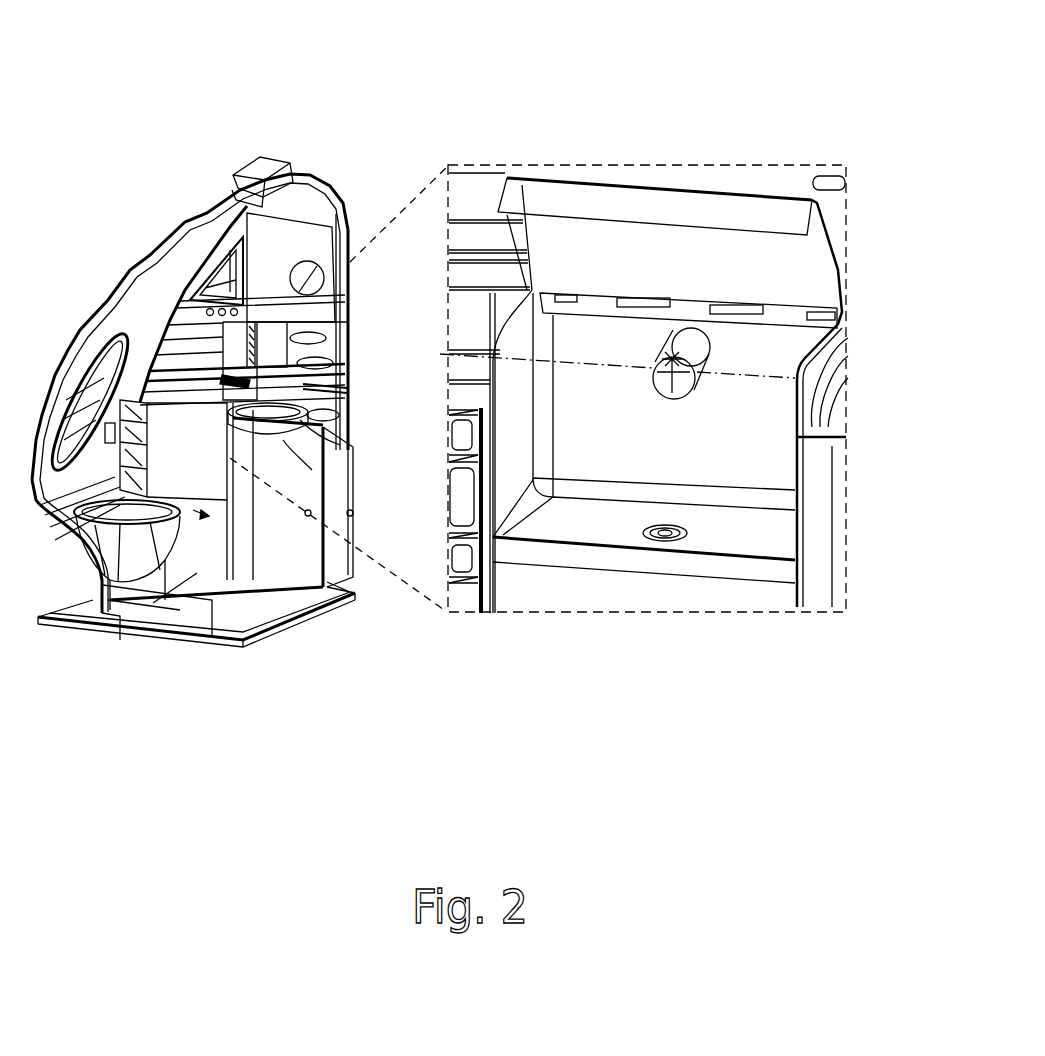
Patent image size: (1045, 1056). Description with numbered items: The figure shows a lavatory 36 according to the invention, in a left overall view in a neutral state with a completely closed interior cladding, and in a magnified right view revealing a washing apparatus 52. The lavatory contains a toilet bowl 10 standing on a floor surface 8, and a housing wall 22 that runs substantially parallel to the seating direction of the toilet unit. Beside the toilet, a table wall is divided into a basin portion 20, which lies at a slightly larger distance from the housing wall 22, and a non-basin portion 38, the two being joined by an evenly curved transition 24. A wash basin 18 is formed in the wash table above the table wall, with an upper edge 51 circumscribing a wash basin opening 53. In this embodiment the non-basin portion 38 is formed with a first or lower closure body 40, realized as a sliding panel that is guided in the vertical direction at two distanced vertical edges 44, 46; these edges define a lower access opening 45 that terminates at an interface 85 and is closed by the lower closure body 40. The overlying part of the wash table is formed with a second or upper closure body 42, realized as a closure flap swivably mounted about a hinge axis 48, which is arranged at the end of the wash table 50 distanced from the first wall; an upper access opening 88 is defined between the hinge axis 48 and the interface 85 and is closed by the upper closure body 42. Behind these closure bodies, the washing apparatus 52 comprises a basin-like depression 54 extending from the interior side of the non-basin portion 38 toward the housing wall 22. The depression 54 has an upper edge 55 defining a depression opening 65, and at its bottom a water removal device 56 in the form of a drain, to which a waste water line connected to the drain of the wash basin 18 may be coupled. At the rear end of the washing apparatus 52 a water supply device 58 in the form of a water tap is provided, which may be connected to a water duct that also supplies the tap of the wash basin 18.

The floor surface 8 is at (243, 572).
The toilet bowl 10 is at (163, 637).
The wash basin 18 is at (310, 263).
The basin portion 20 is at (292, 560).
The housing wall 22 is at (350, 373).
The transition 24 is at (247, 583).
The lavatory 36 is at (361, 94).
The non-basin portion 38 is at (213, 636).
The first closure body 40 is at (586, 695).
The second closure body 42 is at (148, 363).
The vertical edge 44 is at (804, 490).
The lower access opening 45 is at (553, 523).
The vertical edge 46 is at (496, 454).
The hinge axis 48 is at (849, 313).
The wash table 50 is at (473, 317).
The upper edge 51 is at (345, 397).
The washing apparatus 52 is at (233, 367).
The wash basin opening 53 is at (350, 470).
The depression 54 is at (743, 533).
The upper edge 55 is at (687, 478).
The water removal device 56 is at (657, 518).
The water supply device 58 is at (690, 342).
The depression opening 65 is at (728, 510).
The interface 85 is at (746, 372).
The upper access opening 88 is at (587, 303).